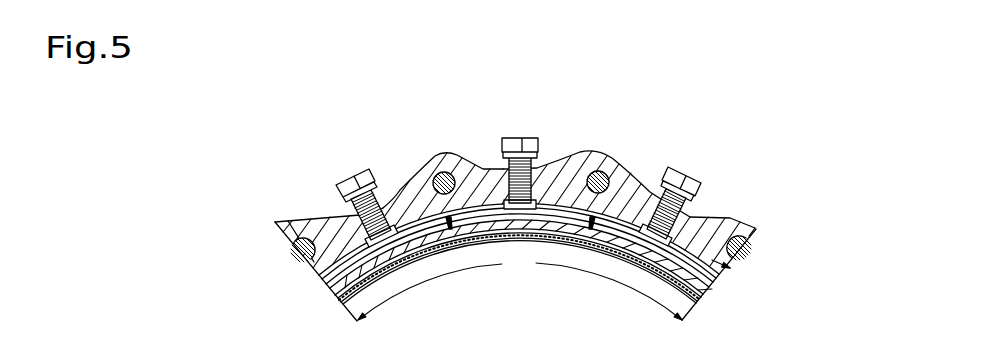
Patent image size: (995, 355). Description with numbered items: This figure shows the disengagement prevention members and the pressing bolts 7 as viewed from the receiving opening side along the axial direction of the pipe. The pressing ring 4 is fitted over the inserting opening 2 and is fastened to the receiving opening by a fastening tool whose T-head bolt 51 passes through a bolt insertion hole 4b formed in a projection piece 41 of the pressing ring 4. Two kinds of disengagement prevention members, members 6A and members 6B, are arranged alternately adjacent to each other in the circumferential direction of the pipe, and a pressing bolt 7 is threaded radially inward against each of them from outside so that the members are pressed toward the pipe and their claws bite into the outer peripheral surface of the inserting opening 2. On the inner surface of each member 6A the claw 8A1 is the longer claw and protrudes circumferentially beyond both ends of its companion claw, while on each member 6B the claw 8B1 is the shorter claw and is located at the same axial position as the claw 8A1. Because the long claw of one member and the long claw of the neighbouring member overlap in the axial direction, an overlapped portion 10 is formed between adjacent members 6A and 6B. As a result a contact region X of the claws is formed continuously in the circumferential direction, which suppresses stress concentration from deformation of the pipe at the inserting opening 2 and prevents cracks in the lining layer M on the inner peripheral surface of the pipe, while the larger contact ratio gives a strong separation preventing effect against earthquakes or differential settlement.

The inserting opening 2 is at (466, 233).
The pressing ring 4 is at (752, 222).
The projection piece 41 is at (291, 222).
The bolt insertion hole 4b is at (448, 168).
The T-head bolt 51 is at (436, 172).
The disengagement prevention member 6A is at (557, 205).
The disengagement prevention member 6B is at (400, 196).
The pressing bolt 7 is at (347, 181).
The claw 8A1 is at (572, 227).
The claw 8B1 is at (390, 250).
The overlapped portion 10 is at (452, 212).
The contact region X is at (520, 283).
The lining layer M is at (687, 318).